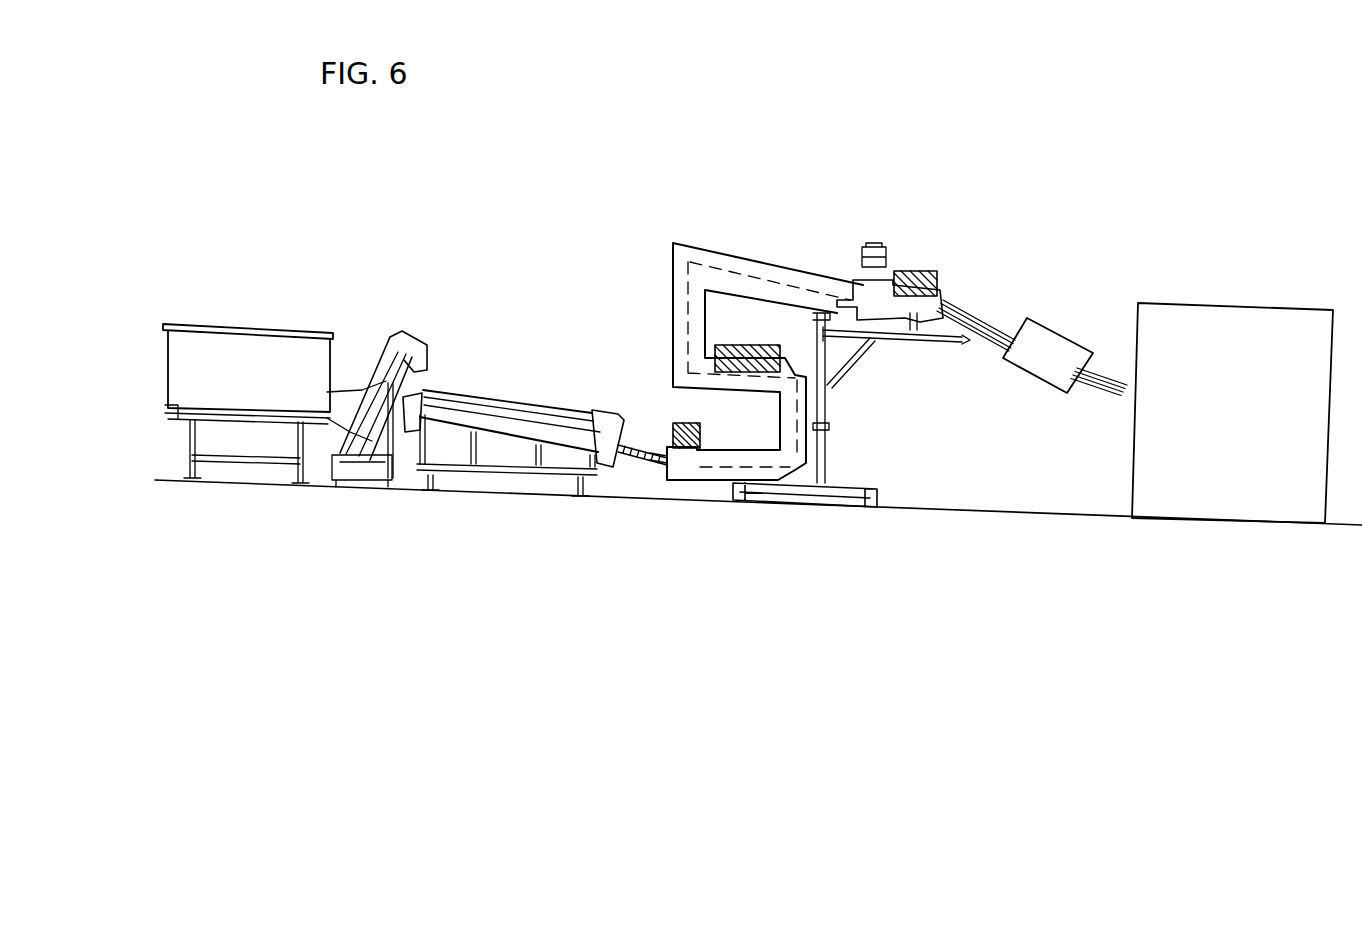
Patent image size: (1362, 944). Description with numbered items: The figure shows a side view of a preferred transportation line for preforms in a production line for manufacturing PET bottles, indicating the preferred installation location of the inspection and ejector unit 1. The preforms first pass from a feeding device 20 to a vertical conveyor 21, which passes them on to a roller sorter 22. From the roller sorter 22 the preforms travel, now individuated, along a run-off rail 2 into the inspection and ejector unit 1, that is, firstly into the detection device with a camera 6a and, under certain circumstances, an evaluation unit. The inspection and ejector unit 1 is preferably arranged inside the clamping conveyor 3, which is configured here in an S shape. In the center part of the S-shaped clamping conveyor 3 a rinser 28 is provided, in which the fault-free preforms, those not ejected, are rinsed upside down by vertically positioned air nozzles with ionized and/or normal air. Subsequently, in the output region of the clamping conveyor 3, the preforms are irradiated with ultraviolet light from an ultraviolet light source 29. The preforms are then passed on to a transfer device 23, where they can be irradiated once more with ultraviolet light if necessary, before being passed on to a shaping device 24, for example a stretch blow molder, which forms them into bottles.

The inspection and ejector unit 1 is at (810, 423).
The run-off rail 2 is at (634, 450).
The clamping conveyor 3 is at (780, 512).
The camera 6a is at (702, 430).
The feeding device 20 is at (263, 383).
The vertical conveyor 21 is at (370, 423).
The roller sorter 22 is at (507, 435).
The transfer device 23 is at (1048, 363).
The shaping device 24 is at (1255, 448).
The rinser 28 is at (733, 340).
The ultraviolet light source 29 is at (910, 268).